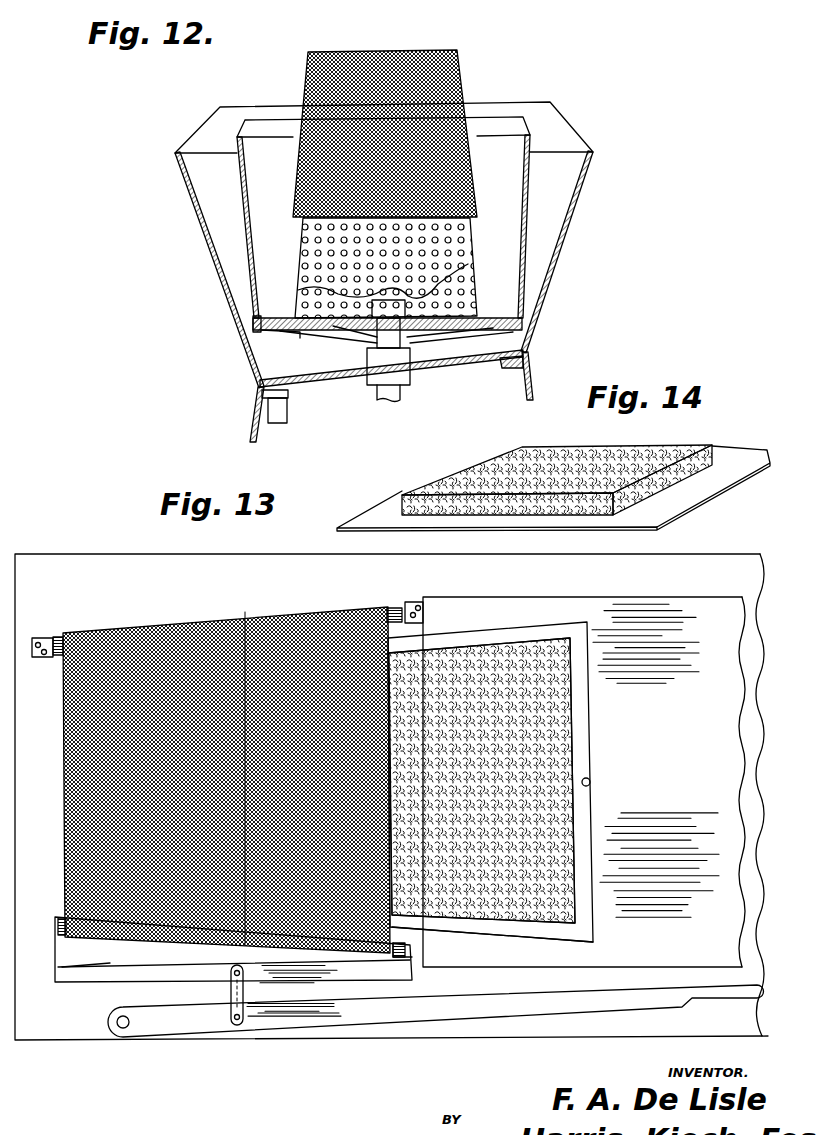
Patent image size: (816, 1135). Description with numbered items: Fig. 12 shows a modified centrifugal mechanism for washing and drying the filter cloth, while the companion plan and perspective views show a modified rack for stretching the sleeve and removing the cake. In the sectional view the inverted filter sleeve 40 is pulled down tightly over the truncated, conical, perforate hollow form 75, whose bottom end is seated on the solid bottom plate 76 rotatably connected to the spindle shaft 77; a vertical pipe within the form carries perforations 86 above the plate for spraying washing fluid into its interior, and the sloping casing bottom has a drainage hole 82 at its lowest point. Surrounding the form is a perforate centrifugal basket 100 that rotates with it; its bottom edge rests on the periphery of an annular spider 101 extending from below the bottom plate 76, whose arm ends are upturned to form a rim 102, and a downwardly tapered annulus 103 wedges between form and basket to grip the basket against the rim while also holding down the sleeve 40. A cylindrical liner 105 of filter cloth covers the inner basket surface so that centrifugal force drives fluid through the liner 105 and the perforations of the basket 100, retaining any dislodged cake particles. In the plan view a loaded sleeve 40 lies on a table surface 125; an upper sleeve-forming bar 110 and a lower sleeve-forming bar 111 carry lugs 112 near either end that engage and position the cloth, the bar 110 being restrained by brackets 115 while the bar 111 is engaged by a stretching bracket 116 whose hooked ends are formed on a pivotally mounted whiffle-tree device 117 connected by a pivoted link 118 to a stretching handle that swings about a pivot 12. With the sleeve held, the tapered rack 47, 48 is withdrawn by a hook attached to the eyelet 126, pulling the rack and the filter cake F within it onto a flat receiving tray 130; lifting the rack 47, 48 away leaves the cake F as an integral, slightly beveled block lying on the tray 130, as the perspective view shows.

In FIG. 12, the filter sleeve 40 is at (445, 50).
In FIG. 13, the filter sleeve 40 is at (143, 633).
In FIG. 12, the perforate centrifugal basket 100 is at (525, 190).
In FIG. 12, the cylindrical liner 105 is at (243, 188).
In FIG. 12, the perforate hollow form 75 is at (408, 303).
In FIG. 12, the perforations 86 is at (466, 270).
In FIG. 12, the tapered annulus 103 is at (280, 316).
In FIG. 12, the upturned rim 102 is at (253, 328).
In FIG. 12, the annular spider 101 is at (283, 333).
In FIG. 12, the bottom plate 76 is at (333, 333).
In FIG. 12, the spindle shaft 77 is at (412, 395).
In FIG. 12, the drainage hole 82 is at (270, 383).
In FIG. 14, the receiving tray 130 is at (697, 497).
In FIG. 13, the receiving tray 130 is at (630, 610).
In FIG. 14, the filter cake F is at (663, 447).
In FIG. 13, the filter cake F is at (547, 748).
In FIG. 13, the table surface 125 is at (110, 568).
In FIG. 13, the tapered rack 47 is at (450, 642).
In FIG. 13, the tapered rack 48 is at (492, 925).
In FIG. 13, the eyelet 126 is at (592, 782).
In FIG. 13, the upper sleeve-forming bar 110 is at (257, 617).
In FIG. 13, the restraining brackets 115 is at (43, 638).
In FIG. 13, the lugs 112 is at (57, 637).
In FIG. 13, the stretching bracket 116 is at (55, 925).
In FIG. 13, the lower sleeve-forming bar 111 is at (112, 940).
In FIG. 13, the pivoted link 118 is at (230, 995).
In FIG. 13, the whiffle-tree device 117 is at (273, 977).
In FIG. 13, the pivot 12 is at (120, 1033).